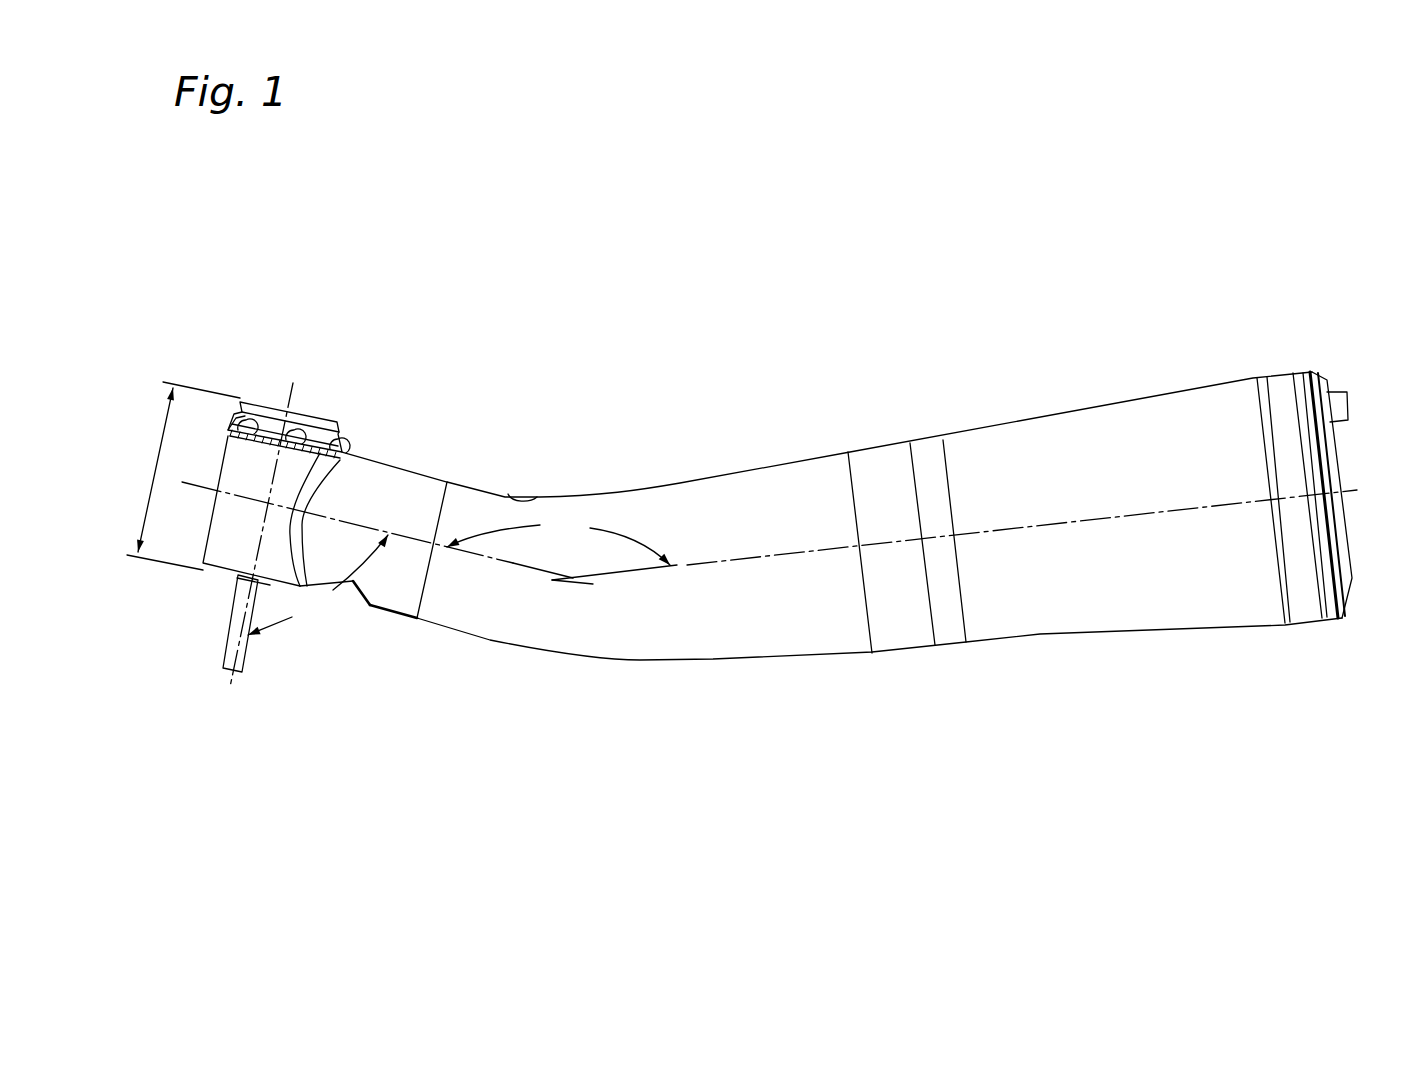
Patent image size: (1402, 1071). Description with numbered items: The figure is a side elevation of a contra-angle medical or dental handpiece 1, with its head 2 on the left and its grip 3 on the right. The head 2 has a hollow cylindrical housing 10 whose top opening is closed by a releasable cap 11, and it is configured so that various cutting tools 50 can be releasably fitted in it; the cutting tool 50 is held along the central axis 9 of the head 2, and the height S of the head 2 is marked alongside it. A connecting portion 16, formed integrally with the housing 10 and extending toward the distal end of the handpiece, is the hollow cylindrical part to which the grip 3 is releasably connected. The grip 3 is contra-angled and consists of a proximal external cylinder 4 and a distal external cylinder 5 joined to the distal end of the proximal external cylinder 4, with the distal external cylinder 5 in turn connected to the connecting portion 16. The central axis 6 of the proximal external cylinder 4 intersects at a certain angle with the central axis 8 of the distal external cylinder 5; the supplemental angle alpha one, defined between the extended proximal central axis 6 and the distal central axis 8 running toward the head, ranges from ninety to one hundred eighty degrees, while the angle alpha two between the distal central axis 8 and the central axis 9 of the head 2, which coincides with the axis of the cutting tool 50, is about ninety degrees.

The handpiece 1 is at (773, 280).
The head 2 is at (268, 529).
The grip 3 is at (518, 688).
The proximal external cylinder 4 is at (1123, 595).
The distal external cylinder 5 is at (467, 495).
The central axis of the proximal external cylinder 6 is at (718, 562).
The central axis of the distal external cylinder 8 is at (513, 565).
The central axis of the head 9 is at (238, 655).
The housing 10 is at (232, 467).
The cap 11 is at (252, 405).
The connecting portion 16 is at (330, 497).
The cutting tool 50 is at (230, 686).